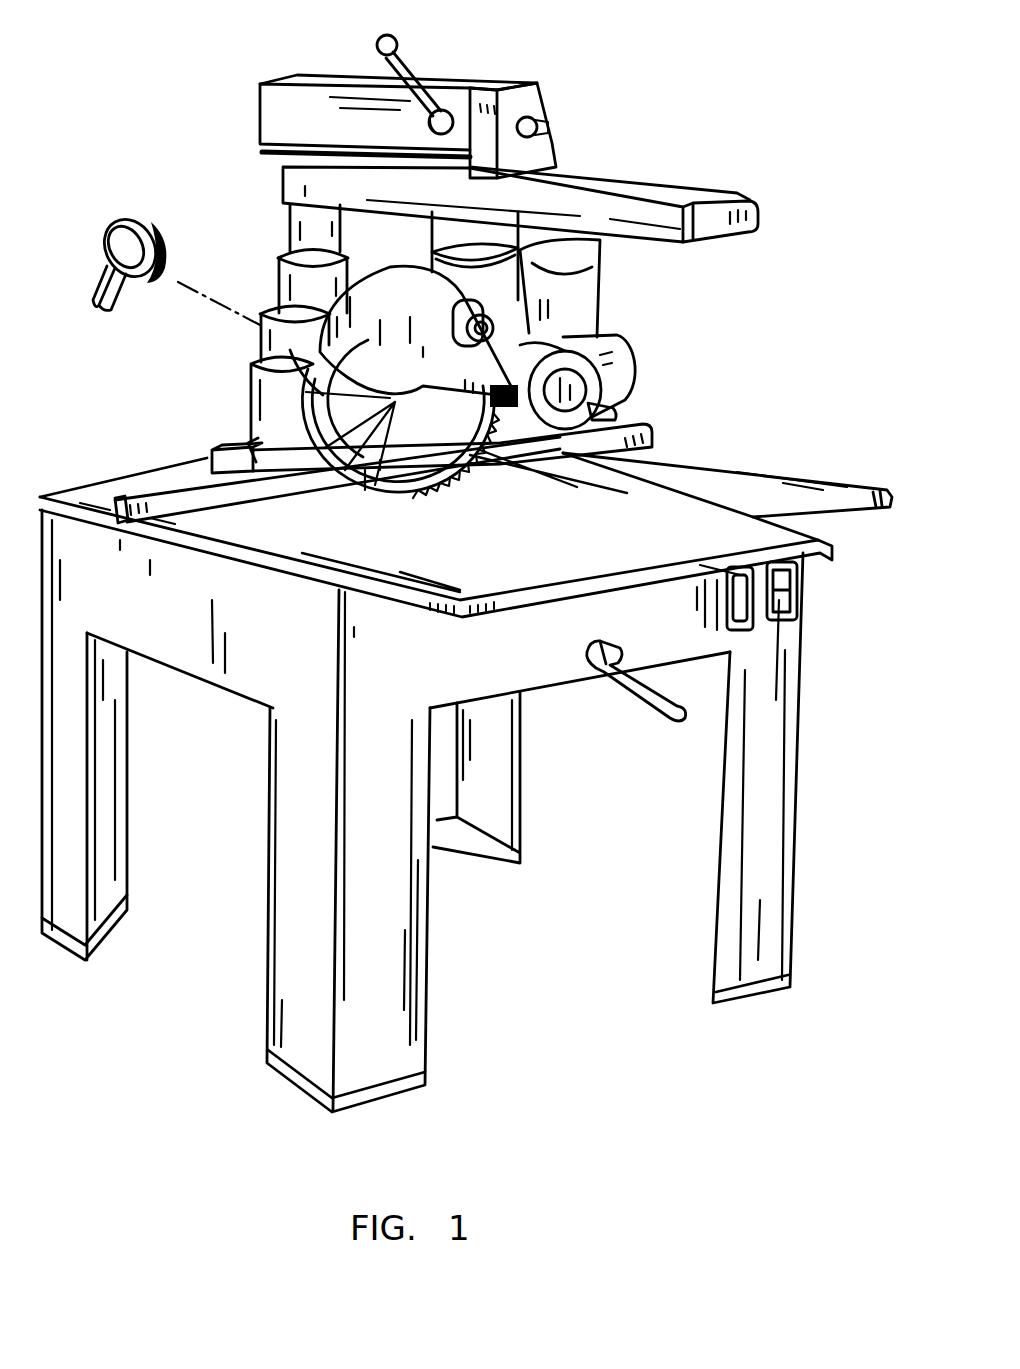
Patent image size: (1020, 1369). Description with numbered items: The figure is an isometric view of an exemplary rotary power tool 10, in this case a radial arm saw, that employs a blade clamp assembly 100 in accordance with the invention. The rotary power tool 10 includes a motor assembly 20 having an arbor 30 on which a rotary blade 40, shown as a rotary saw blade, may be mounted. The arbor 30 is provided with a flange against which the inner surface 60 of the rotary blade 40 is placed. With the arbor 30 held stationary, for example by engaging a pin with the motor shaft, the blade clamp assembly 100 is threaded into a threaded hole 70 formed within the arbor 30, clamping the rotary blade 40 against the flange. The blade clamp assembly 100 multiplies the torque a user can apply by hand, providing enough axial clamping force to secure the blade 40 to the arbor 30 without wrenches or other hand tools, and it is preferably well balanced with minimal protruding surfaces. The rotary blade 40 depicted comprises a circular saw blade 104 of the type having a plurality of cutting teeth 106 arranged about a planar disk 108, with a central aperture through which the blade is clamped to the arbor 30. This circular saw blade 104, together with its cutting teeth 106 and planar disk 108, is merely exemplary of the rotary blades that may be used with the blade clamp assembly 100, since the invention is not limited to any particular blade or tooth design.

The rotary power tool 10 is at (700, 140).
The motor assembly 20 is at (574, 312).
The arbor 30 is at (300, 399).
The rotary blade 40 is at (493, 498).
The inner surface 60 is at (392, 492).
The threaded hole 70 is at (253, 450).
The blade clamp assembly 100 is at (118, 214).
The circular saw blade 104 is at (500, 486).
The cutting teeth 106 is at (432, 495).
The planar disk 108 is at (316, 478).